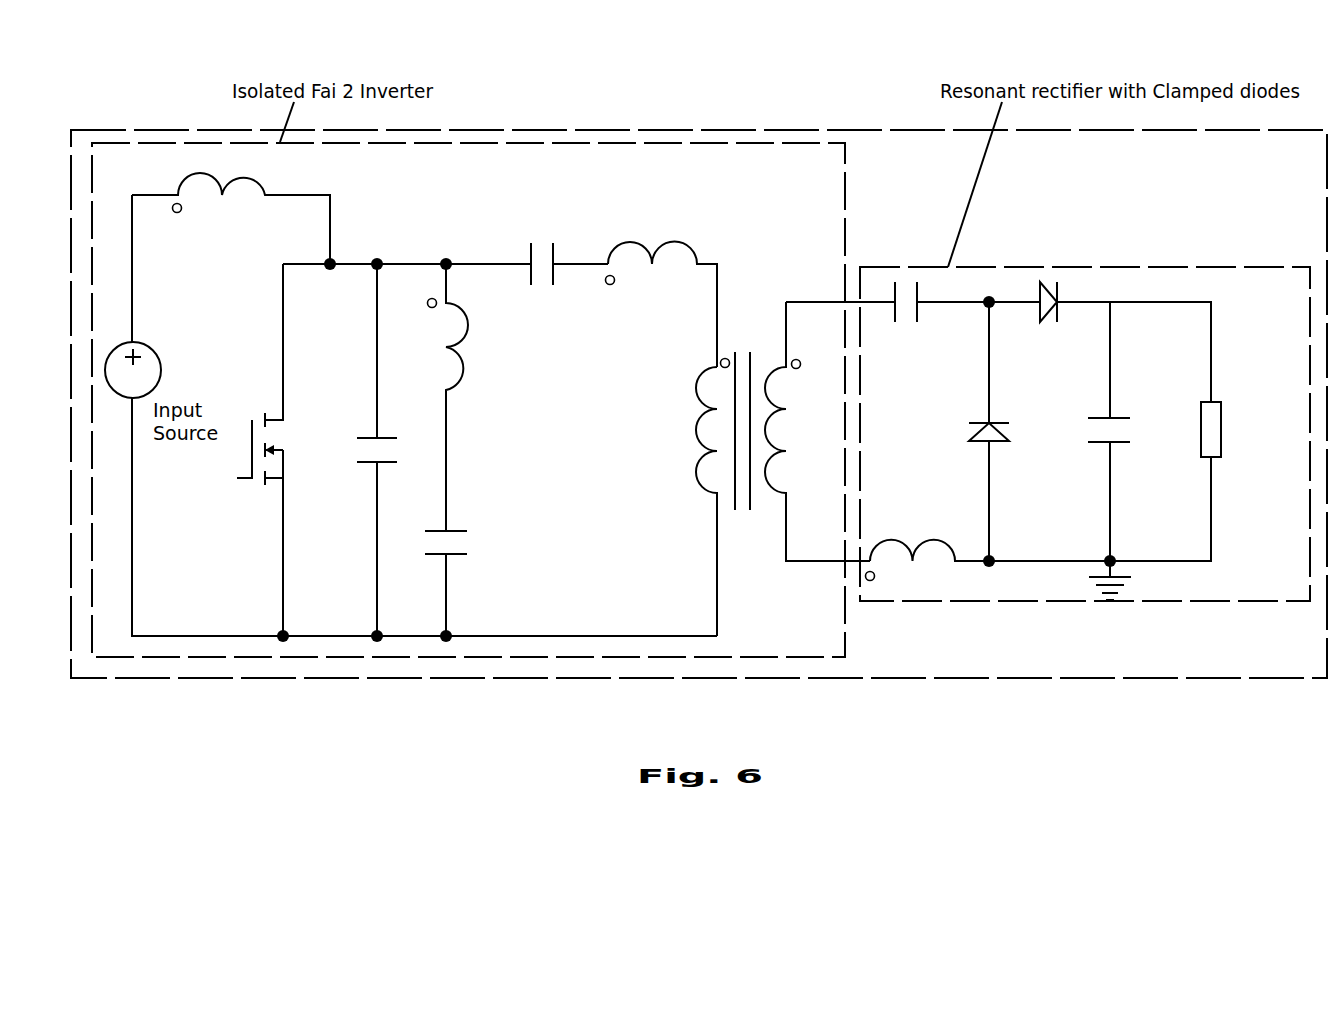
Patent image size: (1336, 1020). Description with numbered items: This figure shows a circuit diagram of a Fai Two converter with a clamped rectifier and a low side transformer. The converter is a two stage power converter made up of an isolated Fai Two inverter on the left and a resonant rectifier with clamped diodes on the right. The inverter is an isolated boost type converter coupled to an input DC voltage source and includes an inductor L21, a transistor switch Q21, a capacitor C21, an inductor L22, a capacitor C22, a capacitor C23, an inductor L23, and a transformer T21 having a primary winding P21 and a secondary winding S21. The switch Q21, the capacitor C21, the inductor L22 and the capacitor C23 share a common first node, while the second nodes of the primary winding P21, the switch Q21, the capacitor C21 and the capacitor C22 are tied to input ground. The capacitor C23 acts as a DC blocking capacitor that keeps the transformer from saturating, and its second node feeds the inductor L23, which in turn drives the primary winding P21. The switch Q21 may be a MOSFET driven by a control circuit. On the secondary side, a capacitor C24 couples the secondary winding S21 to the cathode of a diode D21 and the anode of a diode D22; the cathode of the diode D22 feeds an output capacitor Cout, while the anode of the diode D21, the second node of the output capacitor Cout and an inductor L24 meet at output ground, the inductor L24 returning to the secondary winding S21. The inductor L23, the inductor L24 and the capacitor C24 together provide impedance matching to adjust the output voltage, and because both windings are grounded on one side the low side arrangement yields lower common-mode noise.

The inductor L21 is at (231, 218).
The transistor switch Q21 is at (258, 450).
The capacitor C21 is at (392, 450).
The inductor L22 is at (466, 397).
The capacitor C22 is at (461, 568).
The capacitor C23 is at (565, 277).
The inductor L23 is at (662, 305).
The transformer T21 is at (761, 469).
The primary winding P21 is at (691, 498).
The secondary winding S21 is at (817, 431).
The capacitor C24 is at (913, 316).
The diode D22 is at (1120, 342).
The diode D21 is at (1011, 431).
The output capacitor Cout is at (1128, 431).
The inductor L24 is at (928, 567).